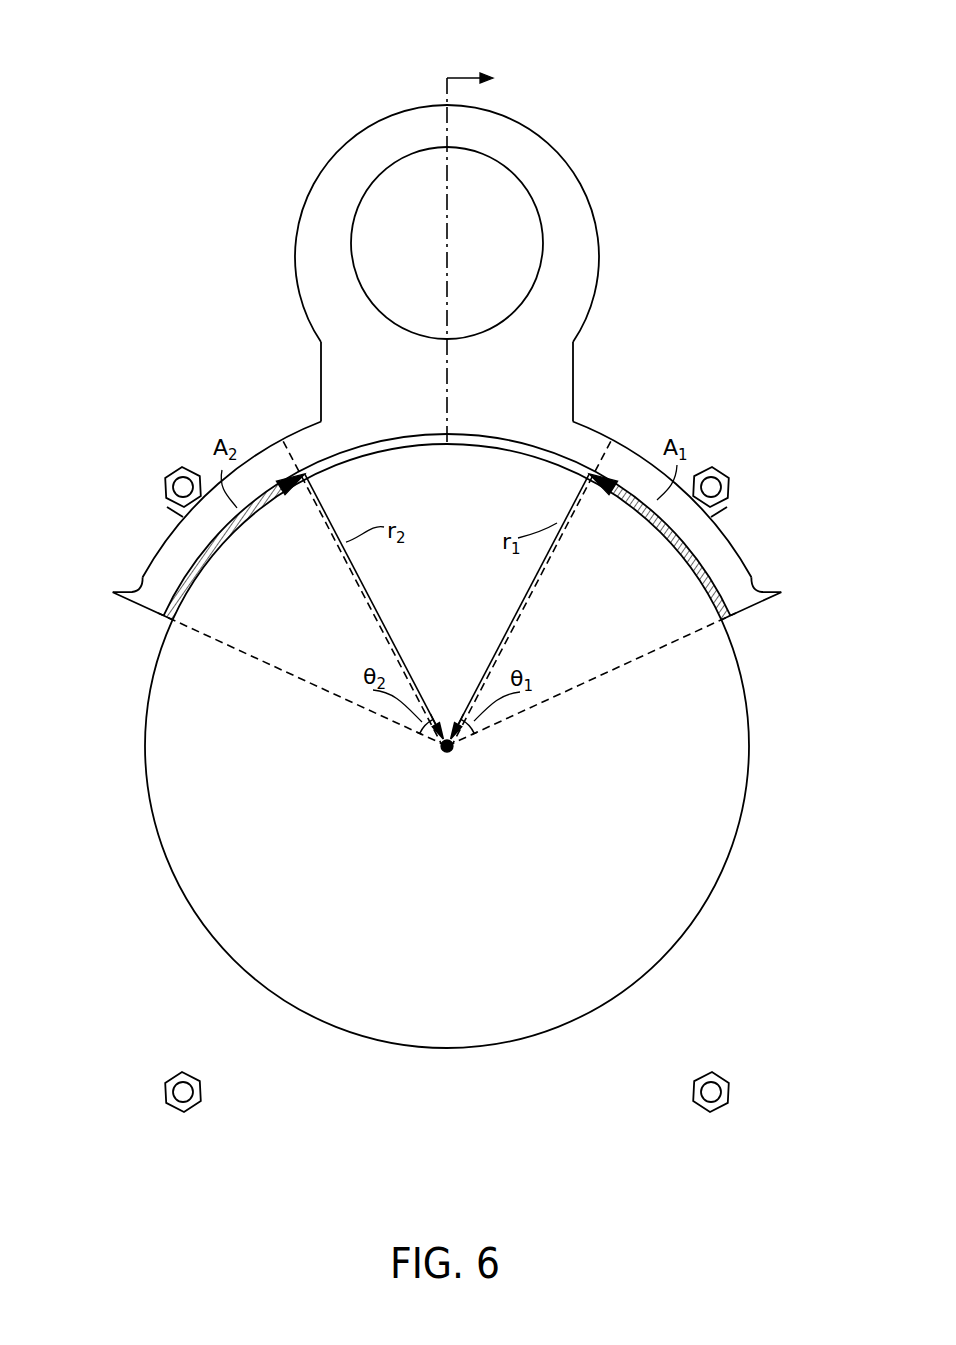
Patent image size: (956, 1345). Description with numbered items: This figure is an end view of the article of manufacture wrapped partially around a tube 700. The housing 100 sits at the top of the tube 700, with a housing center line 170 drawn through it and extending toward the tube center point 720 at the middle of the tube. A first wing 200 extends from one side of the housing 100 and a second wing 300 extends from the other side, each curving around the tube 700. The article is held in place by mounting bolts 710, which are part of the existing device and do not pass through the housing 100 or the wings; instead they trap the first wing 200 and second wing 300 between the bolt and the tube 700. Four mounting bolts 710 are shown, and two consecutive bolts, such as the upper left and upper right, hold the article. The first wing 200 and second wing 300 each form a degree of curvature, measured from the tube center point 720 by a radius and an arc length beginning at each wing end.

The housing 100 is at (548, 123).
The housing center line 170 is at (446, 94).
The first wing 200 is at (755, 550).
The second wing 300 is at (150, 535).
The tube 700 is at (136, 802).
The mounting bolt 710 is at (174, 469).
The tube center point 720 is at (452, 756).